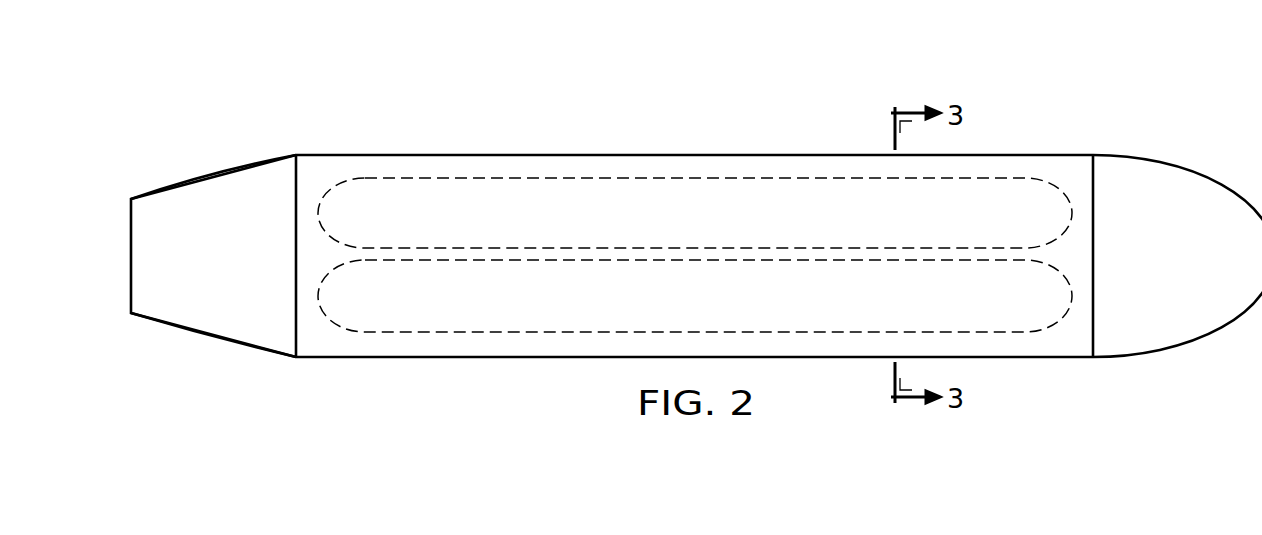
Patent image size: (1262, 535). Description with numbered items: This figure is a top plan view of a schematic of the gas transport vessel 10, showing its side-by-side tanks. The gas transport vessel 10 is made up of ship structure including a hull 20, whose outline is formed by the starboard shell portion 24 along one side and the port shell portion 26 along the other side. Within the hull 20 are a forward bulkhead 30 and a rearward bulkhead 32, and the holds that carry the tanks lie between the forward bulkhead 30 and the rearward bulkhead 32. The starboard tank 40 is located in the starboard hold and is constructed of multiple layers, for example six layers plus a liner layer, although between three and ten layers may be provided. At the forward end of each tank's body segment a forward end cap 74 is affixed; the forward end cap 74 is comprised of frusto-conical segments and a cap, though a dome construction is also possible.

The gas transport vessel 10 is at (696, 225).
The hull 20 is at (1193, 172).
The starboard shell portion 24 is at (520, 357).
The port shell portion 26 is at (520, 155).
The forward bulkhead 30 is at (1095, 178).
The rearward bulkhead 32 is at (296, 320).
The starboard tank 40 is at (694, 259).
The forward end cap 74 is at (1040, 210).